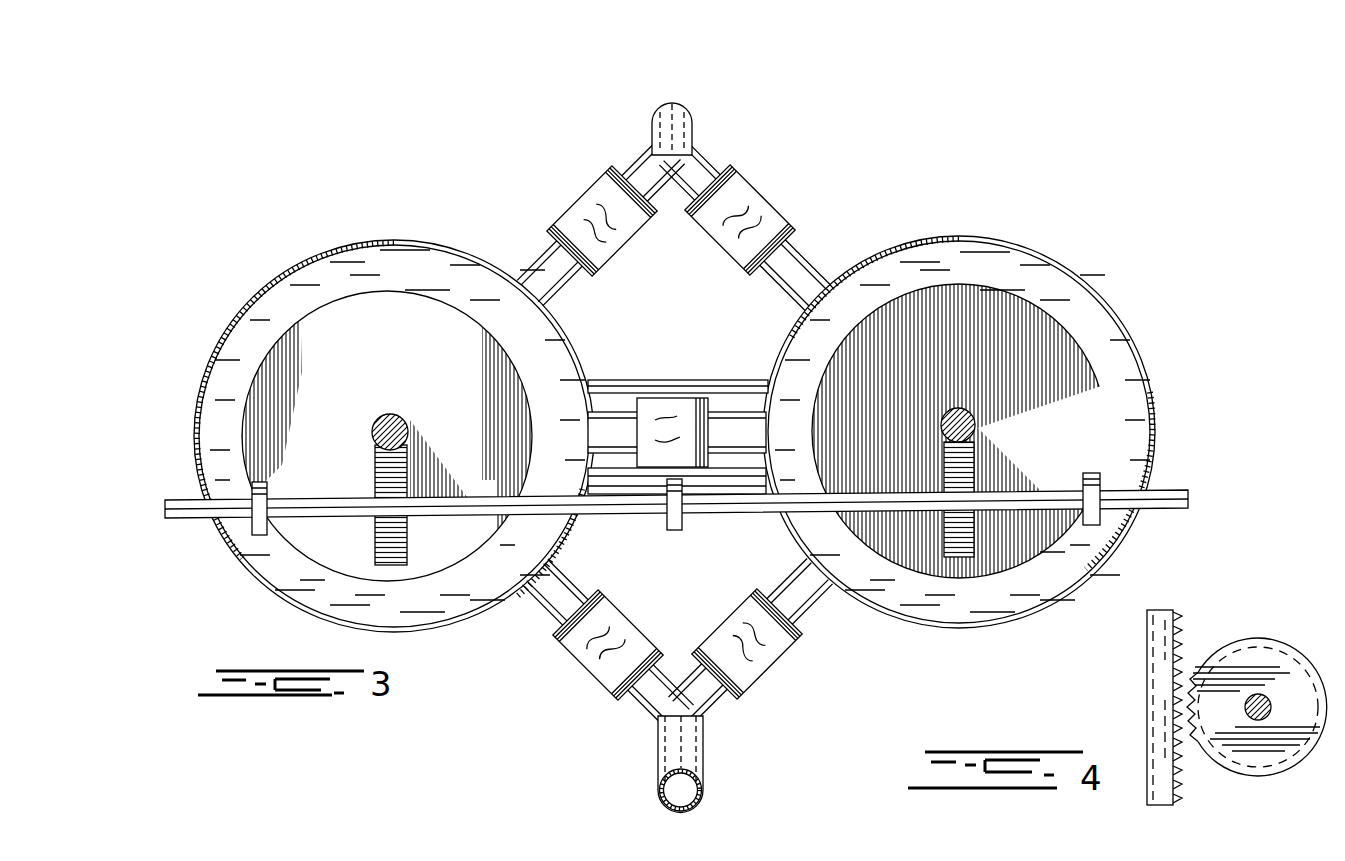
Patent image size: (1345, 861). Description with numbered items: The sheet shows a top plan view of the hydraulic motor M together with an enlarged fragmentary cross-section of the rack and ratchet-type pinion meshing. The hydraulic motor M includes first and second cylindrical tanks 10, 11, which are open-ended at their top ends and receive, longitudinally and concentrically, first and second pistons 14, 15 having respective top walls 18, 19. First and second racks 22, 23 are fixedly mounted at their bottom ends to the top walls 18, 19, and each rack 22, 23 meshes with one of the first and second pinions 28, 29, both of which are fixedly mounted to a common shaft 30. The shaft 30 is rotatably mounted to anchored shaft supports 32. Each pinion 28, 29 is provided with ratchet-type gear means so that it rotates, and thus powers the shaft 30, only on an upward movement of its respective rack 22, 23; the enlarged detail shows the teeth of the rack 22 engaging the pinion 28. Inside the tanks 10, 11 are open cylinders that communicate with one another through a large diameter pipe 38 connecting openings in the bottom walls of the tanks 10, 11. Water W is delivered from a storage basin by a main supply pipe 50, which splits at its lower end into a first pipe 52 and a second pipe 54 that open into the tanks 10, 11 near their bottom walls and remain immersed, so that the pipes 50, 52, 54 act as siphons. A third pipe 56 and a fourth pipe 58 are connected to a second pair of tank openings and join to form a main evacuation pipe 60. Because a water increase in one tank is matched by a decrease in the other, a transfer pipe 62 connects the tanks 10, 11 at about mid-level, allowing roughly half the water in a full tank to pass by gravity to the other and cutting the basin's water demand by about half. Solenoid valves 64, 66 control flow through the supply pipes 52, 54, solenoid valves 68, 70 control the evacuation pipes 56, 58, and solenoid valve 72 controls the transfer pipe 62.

In FIG. 3, the first cylindrical tank 10 is at (386, 420).
In FIG. 3, the second cylindrical tank 11 is at (967, 401).
In FIG. 3, the first piston 14 is at (305, 252).
In FIG. 3, the second piston 15 is at (996, 236).
In FIG. 3, the top wall 18 is at (290, 354).
In FIG. 3, the top wall 19 is at (1085, 375).
In FIG. 3, the first rack 22 is at (390, 411).
In FIG. 4, the first rack 22 is at (1150, 697).
In FIG. 3, the second rack 23 is at (979, 424).
In FIG. 3, the first pinion 28 is at (388, 518).
In FIG. 4, the first pinion 28 is at (1238, 655).
In FIG. 3, the second pinion 29 is at (965, 520).
In FIG. 3, the shaft 30 is at (607, 512).
In FIG. 3, the shaft supports 32 is at (260, 525).
In FIG. 3, the large diameter pipe 38 is at (617, 387).
In FIG. 3, the main supply pipe 50 is at (701, 745).
In FIG. 3, the first pipe 52 is at (545, 598).
In FIG. 3, the second pipe 54 is at (822, 600).
In FIG. 3, the third pipe 56 is at (572, 275).
In FIG. 3, the fourth pipe 58 is at (768, 276).
In FIG. 3, the main evacuation pipe 60 is at (693, 118).
In FIG. 3, the transfer pipe 62 is at (742, 440).
In FIG. 3, the solenoid valve 64 is at (603, 680).
In FIG. 3, the solenoid valve 66 is at (780, 650).
In FIG. 3, the solenoid valve 68 is at (576, 217).
In FIG. 3, the solenoid valve 70 is at (742, 188).
In FIG. 3, the solenoid valve 72 is at (690, 400).
In FIG. 3, the hydraulic motor M is at (861, 221).
In FIG. 3, the wheel W is at (404, 254).